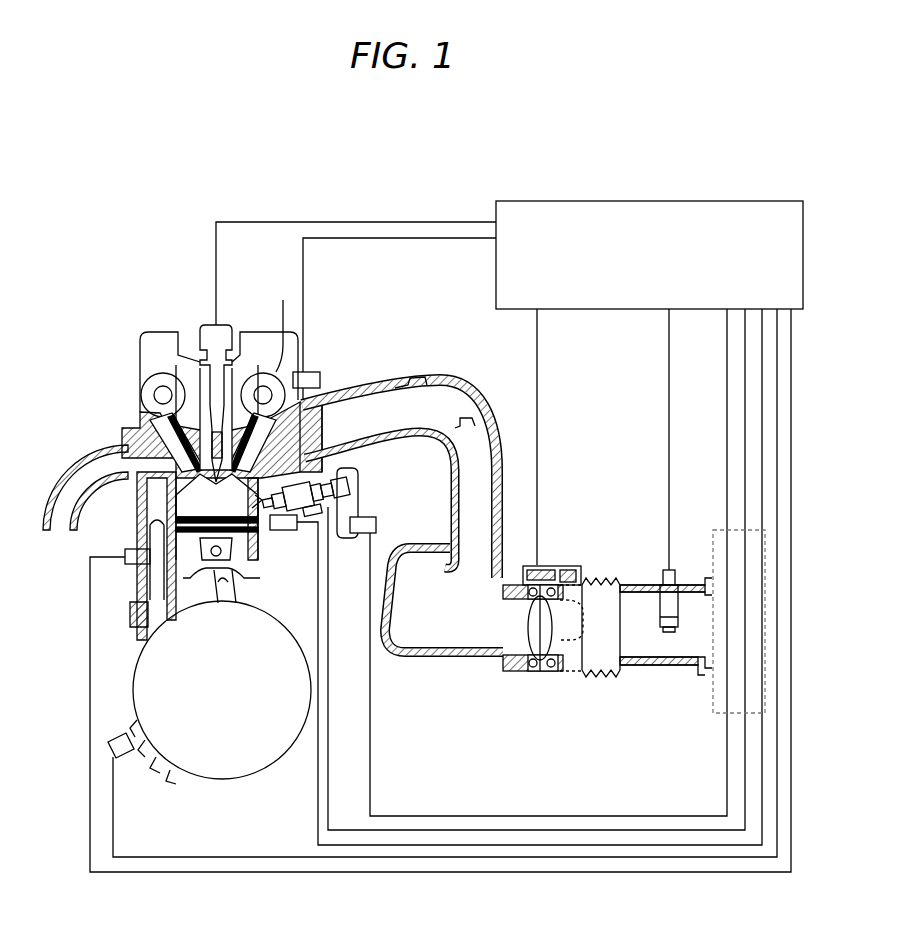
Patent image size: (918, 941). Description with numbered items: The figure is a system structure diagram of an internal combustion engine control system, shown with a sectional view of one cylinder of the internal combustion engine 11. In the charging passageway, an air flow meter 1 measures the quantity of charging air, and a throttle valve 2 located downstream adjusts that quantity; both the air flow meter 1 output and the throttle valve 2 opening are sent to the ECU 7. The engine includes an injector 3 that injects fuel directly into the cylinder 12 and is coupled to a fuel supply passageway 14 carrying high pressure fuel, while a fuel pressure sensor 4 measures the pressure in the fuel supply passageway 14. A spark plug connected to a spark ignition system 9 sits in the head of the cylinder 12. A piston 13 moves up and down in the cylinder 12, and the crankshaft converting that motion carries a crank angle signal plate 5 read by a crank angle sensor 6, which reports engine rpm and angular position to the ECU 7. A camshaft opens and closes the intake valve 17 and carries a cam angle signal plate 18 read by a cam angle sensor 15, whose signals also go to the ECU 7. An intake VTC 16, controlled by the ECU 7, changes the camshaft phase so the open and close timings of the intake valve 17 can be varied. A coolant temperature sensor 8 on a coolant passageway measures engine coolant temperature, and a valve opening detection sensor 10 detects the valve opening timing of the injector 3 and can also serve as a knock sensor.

The air flow meter 1 is at (668, 632).
The throttle valve 2 is at (532, 645).
The injector 3 is at (345, 486).
The fuel pressure sensor 4 is at (365, 530).
The crank angle signal plate 5 is at (243, 758).
The crank angle sensor 6 is at (120, 748).
The ECU 7 is at (650, 201).
The coolant temperature sensor 8 is at (125, 557).
The spark ignition system 9 is at (205, 330).
The valve opening detection sensor 10 is at (282, 523).
The internal combustion engine 11 is at (122, 432).
The cylinder 12 is at (190, 498).
The piston 13 is at (192, 562).
The fuel supply passageway 14 is at (352, 495).
The cam angle sensor 15 is at (312, 372).
The intake VTC 16 is at (260, 375).
The intake valve 17 is at (318, 405).
The cam angle signal plate 18 is at (285, 300).